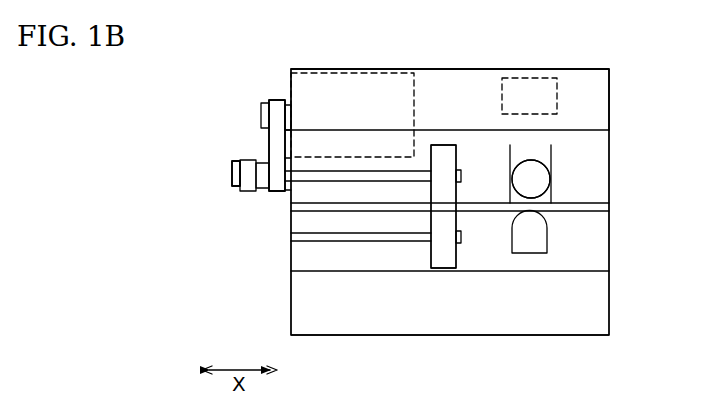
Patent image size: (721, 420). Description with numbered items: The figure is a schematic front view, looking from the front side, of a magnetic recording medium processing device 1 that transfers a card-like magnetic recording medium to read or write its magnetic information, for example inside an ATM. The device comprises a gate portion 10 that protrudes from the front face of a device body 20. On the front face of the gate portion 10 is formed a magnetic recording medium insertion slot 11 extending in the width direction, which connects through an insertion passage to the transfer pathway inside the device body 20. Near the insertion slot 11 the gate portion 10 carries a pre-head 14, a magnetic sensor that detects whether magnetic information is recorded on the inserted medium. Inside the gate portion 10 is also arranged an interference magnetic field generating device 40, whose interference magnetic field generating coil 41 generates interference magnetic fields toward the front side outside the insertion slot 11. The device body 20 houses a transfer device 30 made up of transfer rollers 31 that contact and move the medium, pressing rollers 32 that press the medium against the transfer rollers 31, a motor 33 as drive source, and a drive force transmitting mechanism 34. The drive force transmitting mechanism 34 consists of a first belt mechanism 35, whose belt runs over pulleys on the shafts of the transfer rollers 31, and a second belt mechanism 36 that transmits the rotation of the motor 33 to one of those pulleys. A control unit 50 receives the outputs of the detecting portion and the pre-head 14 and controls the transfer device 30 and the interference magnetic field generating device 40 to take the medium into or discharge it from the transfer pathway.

The magnetic recording medium processing device 1 is at (235, 59).
The gate portion 10 is at (593, 120).
The magnetic recording medium insertion slot 11 is at (603, 209).
The pre-head 14 is at (549, 246).
The device body 20 is at (591, 63).
The transfer device 30 is at (246, 206).
The transfer rollers 31 is at (446, 147).
The pressing rollers 32 is at (445, 270).
The motor 33 is at (345, 75).
The drive force transmitting mechanism 34 is at (170, 113).
The first belt mechanism 35 is at (231, 176).
The second belt mechanism 36 is at (261, 146).
The interference magnetic field generating device 40 is at (531, 179).
The interference magnetic field generating coil 41 is at (551, 178).
The control unit 50 is at (531, 80).